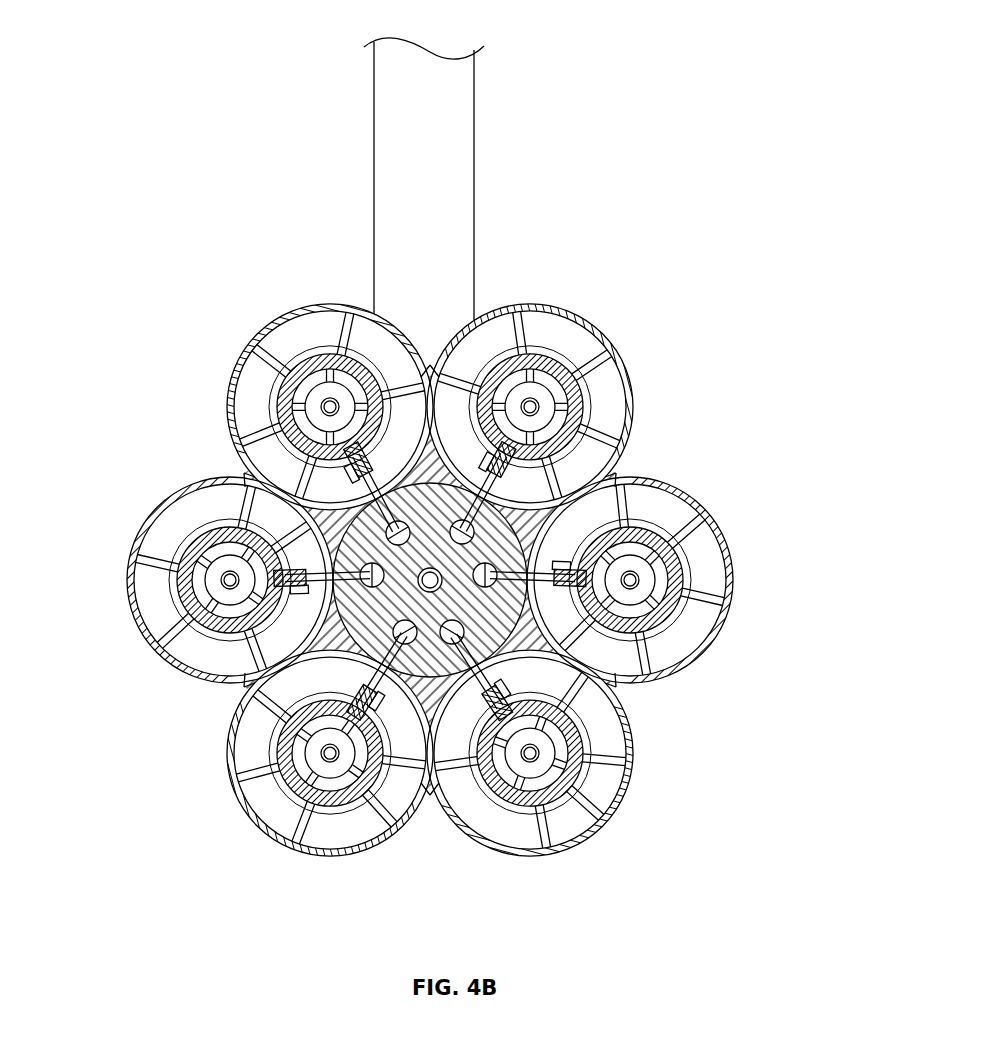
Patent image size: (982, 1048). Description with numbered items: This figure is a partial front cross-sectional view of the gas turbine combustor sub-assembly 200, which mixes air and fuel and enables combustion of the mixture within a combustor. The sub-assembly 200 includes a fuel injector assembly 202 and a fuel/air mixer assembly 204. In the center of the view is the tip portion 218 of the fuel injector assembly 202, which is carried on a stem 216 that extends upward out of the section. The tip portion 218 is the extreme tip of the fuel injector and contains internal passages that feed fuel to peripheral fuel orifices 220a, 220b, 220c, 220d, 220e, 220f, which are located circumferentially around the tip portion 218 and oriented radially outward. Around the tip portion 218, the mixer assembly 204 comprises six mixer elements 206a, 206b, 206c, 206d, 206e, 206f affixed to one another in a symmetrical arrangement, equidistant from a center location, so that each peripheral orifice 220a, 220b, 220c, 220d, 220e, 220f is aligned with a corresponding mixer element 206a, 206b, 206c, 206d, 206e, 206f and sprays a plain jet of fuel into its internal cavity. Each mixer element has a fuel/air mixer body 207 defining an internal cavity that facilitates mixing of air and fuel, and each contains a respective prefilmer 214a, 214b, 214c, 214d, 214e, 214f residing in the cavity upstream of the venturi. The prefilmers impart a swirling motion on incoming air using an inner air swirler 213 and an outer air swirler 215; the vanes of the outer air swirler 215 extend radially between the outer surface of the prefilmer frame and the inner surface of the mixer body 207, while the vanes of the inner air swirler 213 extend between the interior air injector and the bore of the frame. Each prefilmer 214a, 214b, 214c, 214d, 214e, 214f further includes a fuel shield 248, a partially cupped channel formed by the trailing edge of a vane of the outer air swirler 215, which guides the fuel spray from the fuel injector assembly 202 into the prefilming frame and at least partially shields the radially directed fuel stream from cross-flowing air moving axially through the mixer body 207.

The gas turbine combustor sub-assembly 200 is at (232, 58).
The fuel injector assembly 202 is at (510, 188).
The fuel/air mixer assembly 204 is at (752, 405).
The mixer element 206a is at (565, 330).
The mixer element 206b is at (728, 555).
The mixer element 206c is at (598, 778).
The mixer element 206d is at (343, 857).
The mixer element 206e is at (145, 592).
The mixer element 206f is at (268, 328).
The fuel/air mixer body 207 is at (240, 362).
The inner air swirler 213 is at (362, 332).
The prefilmer 214a is at (605, 385).
The prefilmer 214b is at (688, 515).
The prefilmer 214c is at (565, 830).
The prefilmer 214d is at (296, 835).
The prefilmer 214e is at (160, 528).
The prefilmer 214f is at (326, 322).
The outer air swirler 215 is at (384, 314).
The stem 216 is at (464, 118).
The tip portion 218 is at (452, 514).
The peripheral fuel orifice 220a is at (600, 430).
The peripheral fuel orifice 220b is at (635, 662).
The peripheral fuel orifice 220c is at (443, 812).
The peripheral fuel orifice 220d is at (300, 700).
The peripheral fuel orifice 220e is at (300, 462).
The peripheral fuel orifice 220f is at (285, 395).
The fuel shield 248 is at (440, 325).